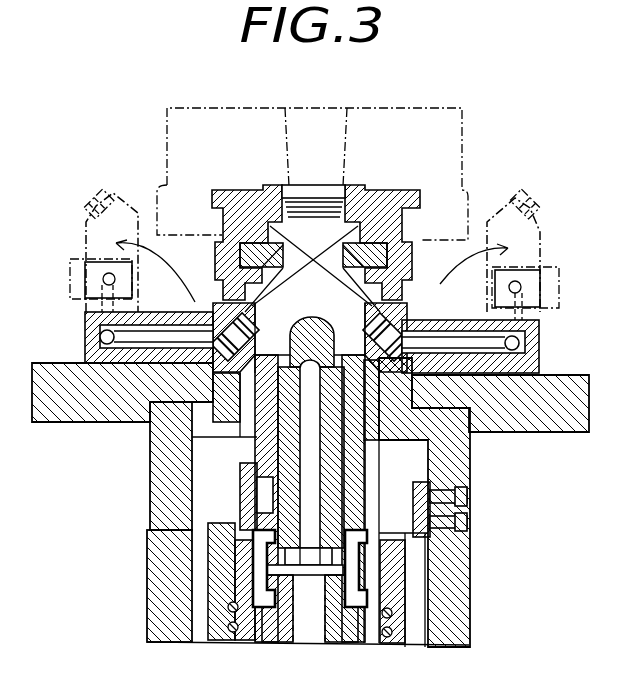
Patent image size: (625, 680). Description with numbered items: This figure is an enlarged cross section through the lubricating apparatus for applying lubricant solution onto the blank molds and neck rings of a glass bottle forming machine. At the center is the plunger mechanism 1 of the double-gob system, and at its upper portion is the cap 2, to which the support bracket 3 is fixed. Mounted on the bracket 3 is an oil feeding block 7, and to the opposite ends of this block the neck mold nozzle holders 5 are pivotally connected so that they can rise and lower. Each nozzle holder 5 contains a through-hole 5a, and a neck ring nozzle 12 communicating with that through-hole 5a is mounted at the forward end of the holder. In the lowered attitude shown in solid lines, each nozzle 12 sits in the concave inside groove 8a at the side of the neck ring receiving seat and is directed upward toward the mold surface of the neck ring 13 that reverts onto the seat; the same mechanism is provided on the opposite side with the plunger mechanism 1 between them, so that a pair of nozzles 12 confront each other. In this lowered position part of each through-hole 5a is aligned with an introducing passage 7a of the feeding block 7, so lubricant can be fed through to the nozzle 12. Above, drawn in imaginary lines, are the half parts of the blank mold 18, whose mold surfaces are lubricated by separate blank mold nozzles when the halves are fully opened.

The plunger mechanism 1 is at (141, 515).
The cap 2 is at (148, 473).
The support bracket 3 is at (88, 413).
The neck mold nozzle holder 5 is at (85, 326).
The through-hole 5a is at (157, 340).
The oil feeding block 7 is at (100, 256).
The introducing passage 7a is at (100, 296).
The inside groove 8a is at (216, 303).
The neck ring nozzle 12 is at (228, 322).
The neck ring 13 is at (397, 194).
The half part of blank mold 18 is at (166, 130).